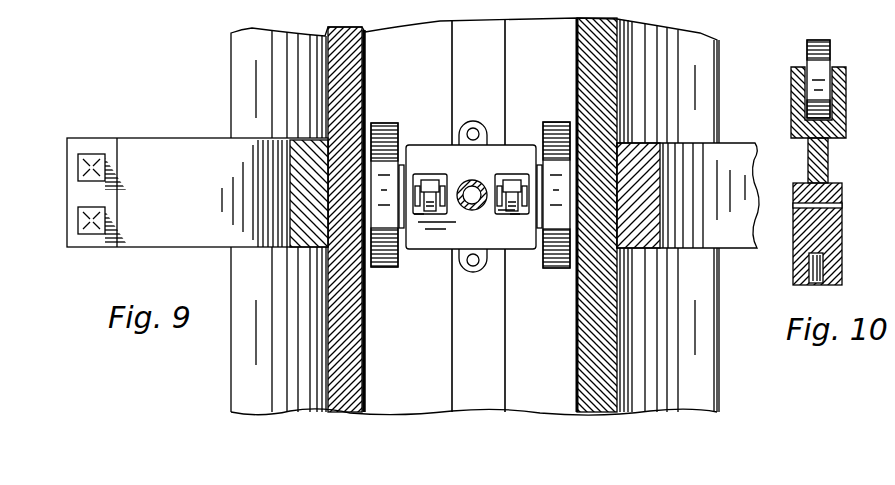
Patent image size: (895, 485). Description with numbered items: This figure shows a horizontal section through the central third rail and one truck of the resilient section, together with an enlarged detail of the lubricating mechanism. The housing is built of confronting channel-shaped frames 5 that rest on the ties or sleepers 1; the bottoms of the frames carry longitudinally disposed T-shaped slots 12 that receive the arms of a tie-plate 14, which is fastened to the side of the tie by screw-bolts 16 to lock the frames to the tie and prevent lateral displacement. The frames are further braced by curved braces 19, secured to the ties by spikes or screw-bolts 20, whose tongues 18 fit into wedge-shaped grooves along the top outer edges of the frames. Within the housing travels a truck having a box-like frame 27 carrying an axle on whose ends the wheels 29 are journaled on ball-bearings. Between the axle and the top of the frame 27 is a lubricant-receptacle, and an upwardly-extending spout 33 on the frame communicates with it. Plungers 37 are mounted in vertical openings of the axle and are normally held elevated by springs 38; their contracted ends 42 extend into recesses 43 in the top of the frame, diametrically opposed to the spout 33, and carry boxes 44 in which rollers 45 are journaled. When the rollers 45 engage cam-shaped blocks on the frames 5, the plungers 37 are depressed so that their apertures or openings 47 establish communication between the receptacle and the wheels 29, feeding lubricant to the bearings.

In FIG. 9, the ties or sleepers 1 is at (102, 0).
In FIG. 9, the channel-shaped frames 5 is at (318, 0).
In FIG. 9, the T-shaped slots 12 is at (293, 0).
In FIG. 9, the tie-plate 14 is at (221, 0).
In FIG. 9, the screw-bolts 16 is at (173, 0).
In FIG. 9, the tongues 18 is at (475, 194).
In FIG. 9, the curved braces 19 is at (188, 140).
In FIG. 9, the spikes or screw-bolts 20 is at (93, 163).
In FIG. 9, the box-like frame 27 is at (450, 160).
In FIG. 9, the wheels 29 is at (388, 124).
In FIG. 9, the spout 33 is at (462, 207).
In FIG. 10, the plungers 37 is at (843, 228).
In FIG. 9, the springs 38 is at (389, 0).
In FIG. 10, the contracted ends 42 is at (826, 154).
In FIG. 9, the recesses 43 is at (421, 213).
In FIG. 9, the boxes 44 is at (520, 180).
In FIG. 10, the boxes 44 is at (846, 113).
In FIG. 9, the rollers 45 is at (437, 208).
In FIG. 10, the rollers 45 is at (822, 51).
In FIG. 10, the apertures or openings 47 is at (842, 203).